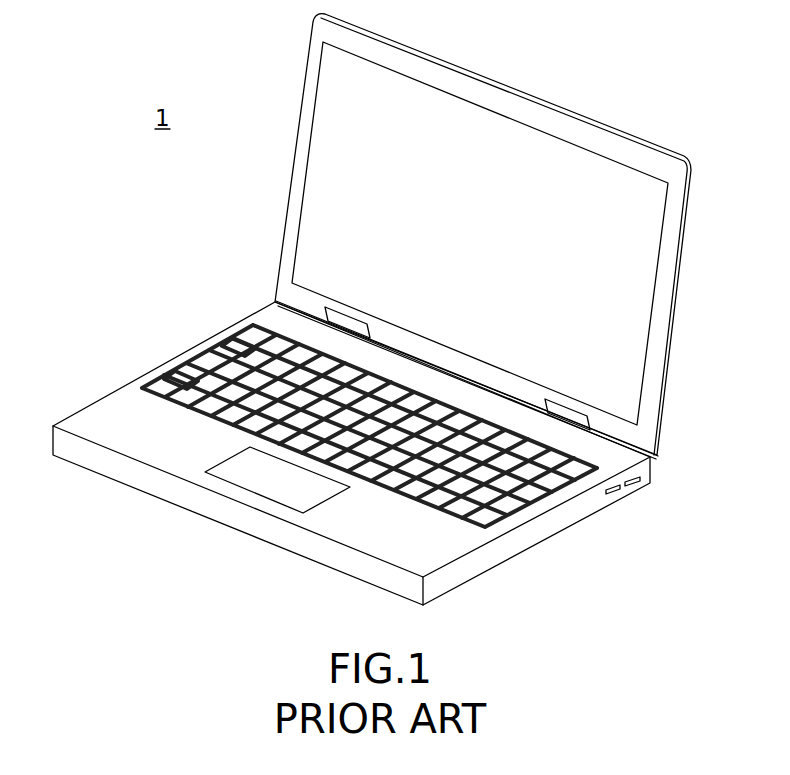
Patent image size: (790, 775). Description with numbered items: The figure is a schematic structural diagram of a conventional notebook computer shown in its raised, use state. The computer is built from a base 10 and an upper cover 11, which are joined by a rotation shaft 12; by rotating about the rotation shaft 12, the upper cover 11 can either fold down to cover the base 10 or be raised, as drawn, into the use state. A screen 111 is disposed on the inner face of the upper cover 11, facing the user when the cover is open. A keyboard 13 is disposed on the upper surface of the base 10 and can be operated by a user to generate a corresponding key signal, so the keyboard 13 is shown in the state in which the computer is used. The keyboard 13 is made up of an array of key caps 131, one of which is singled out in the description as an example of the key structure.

The base / host body 10 is at (122, 409).
The display lid 11 is at (494, 236).
The display screen 111 is at (617, 185).
The hinge 12 is at (352, 325).
The keyboard 13 is at (518, 497).
The key 131 is at (247, 355).